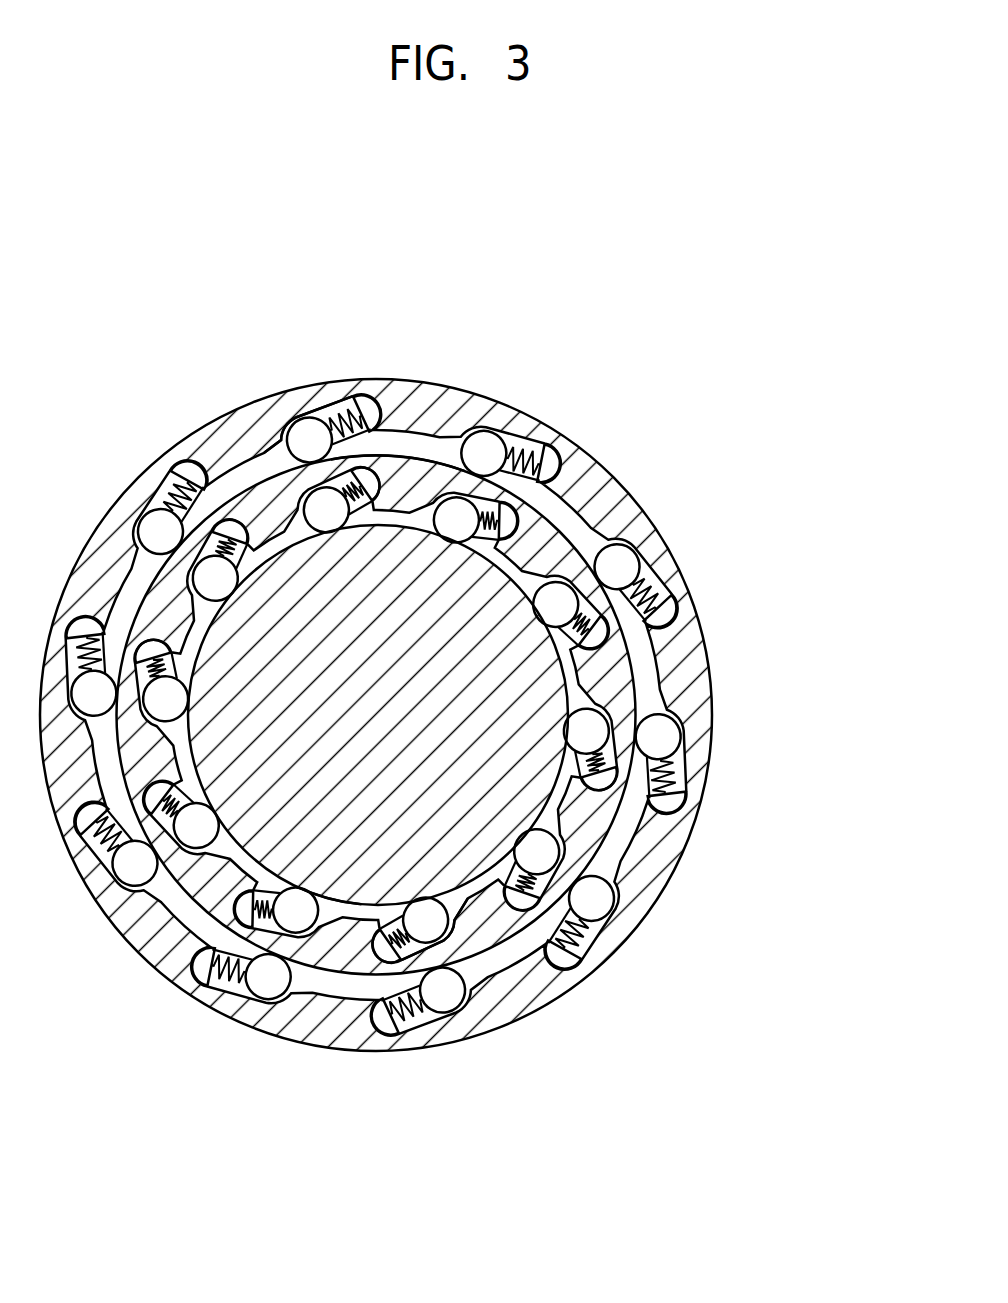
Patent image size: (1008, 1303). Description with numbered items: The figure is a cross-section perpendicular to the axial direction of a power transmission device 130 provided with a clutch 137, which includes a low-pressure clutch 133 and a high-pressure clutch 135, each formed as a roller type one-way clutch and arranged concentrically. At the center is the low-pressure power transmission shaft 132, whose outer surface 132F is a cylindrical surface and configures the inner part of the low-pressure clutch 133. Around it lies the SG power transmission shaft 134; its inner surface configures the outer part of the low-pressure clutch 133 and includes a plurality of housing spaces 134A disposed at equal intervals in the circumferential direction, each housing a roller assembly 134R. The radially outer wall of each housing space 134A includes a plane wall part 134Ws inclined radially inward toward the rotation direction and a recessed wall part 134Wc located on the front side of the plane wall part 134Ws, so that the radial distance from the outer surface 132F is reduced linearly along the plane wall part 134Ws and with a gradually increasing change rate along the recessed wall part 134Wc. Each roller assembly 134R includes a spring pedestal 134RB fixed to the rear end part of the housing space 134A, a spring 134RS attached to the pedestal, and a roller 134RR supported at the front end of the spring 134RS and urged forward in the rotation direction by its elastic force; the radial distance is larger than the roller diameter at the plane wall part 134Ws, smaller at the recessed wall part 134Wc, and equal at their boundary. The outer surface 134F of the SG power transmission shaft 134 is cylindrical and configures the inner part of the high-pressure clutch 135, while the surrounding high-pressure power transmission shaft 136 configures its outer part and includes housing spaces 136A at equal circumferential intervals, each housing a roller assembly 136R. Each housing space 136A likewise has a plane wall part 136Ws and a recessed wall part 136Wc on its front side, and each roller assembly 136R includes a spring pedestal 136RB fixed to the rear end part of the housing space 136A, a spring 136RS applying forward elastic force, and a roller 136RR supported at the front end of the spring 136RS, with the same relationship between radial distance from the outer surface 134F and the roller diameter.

The power transmission device 130 is at (687, 280).
The low-pressure power transmission shaft 132 is at (533, 700).
The outer surface of low-pressure power transmission shaft 132F is at (338, 900).
The low-pressure clutch 133 is at (660, 1155).
The SG power transmission shaft 134 is at (600, 672).
The outer surface of SG power transmission shaft 134F is at (423, 452).
The roller assembly 134R is at (510, 805).
The roller 134RR is at (535, 857).
The spring 134RS is at (520, 882).
The spring pedestal 134RB is at (512, 905).
The plane wall part 134Ws is at (460, 917).
The recessed wall part 134Wc is at (455, 892).
The housing space 134A is at (493, 900).
The high-pressure clutch 135 is at (524, 282).
The high-pressure power transmission shaft 136 is at (667, 632).
The housing space 136A is at (250, 458).
The recessed wall part 136Wc is at (297, 418).
The plane wall part 136Ws is at (347, 400).
The roller assembly 136R is at (429, 658).
The roller 136RR is at (482, 442).
The spring 136RS is at (512, 448).
The spring pedestal 136RB is at (548, 463).
The clutch 137 is at (465, 719).